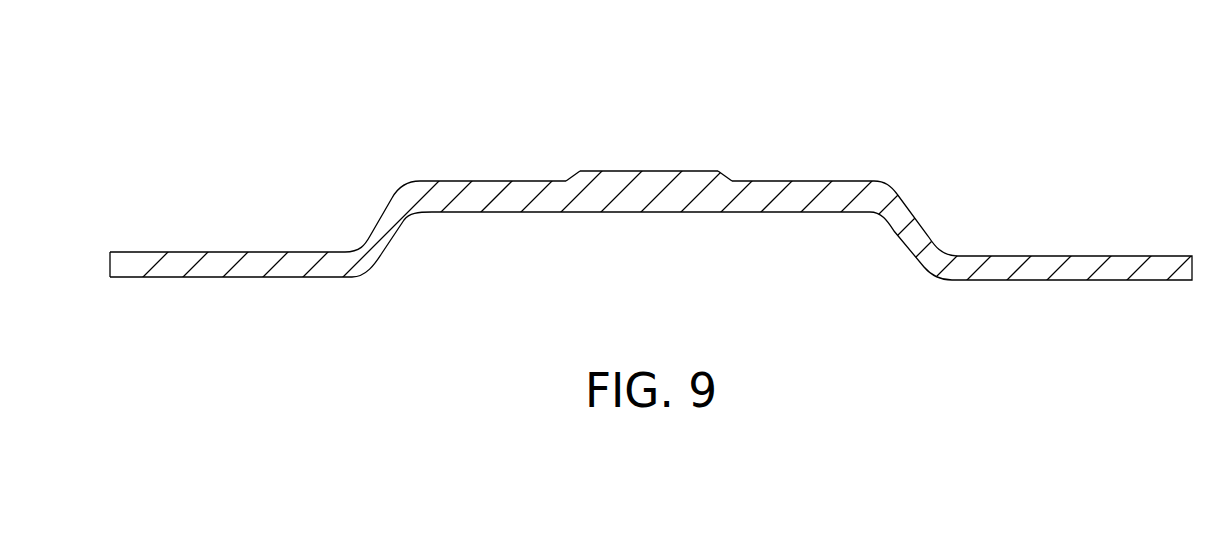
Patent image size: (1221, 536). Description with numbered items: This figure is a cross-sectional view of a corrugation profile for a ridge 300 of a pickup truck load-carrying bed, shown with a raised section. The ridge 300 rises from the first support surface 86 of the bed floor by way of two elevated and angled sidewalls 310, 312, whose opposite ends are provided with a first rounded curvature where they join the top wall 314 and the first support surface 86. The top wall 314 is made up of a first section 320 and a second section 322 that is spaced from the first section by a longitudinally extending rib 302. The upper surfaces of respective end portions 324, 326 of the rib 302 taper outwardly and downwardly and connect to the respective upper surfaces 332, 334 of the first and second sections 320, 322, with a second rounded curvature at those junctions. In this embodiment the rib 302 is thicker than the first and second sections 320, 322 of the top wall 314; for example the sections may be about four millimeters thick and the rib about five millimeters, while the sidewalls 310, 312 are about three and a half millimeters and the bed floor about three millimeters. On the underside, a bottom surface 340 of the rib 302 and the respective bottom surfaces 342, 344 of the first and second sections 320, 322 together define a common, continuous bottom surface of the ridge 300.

The ridge 300 is at (876, 94).
The rib 302 is at (649, 150).
The sidewall 310 is at (335, 210).
The sidewall 312 is at (950, 199).
The top wall 314 is at (494, 168).
The first section 320 is at (471, 202).
The second section 322 is at (826, 203).
The end portion 324 is at (571, 178).
The end portion 326 is at (723, 178).
The upper surface 332 is at (452, 180).
The upper surface 334 is at (810, 182).
The bottom surface 340 is at (653, 213).
The bottom surface 342 is at (512, 213).
The bottom surface 344 is at (774, 213).
The first support surface 86 is at (1133, 256).